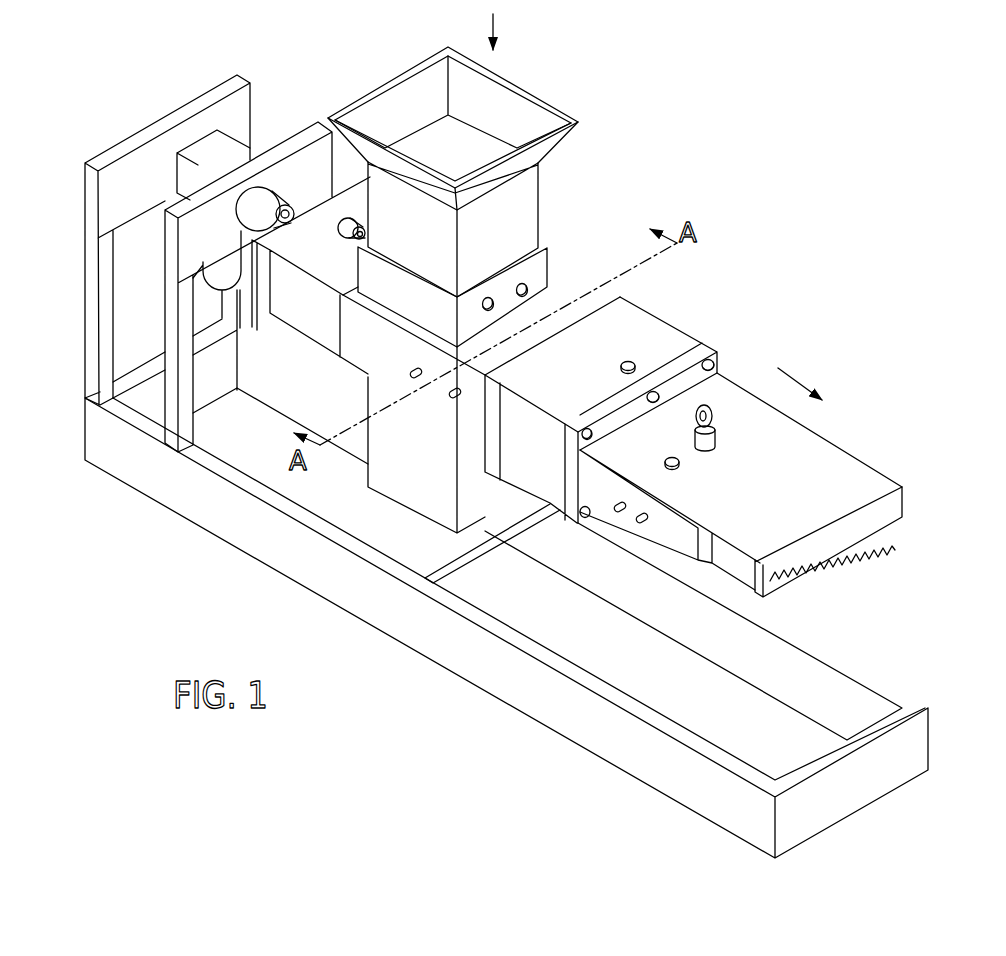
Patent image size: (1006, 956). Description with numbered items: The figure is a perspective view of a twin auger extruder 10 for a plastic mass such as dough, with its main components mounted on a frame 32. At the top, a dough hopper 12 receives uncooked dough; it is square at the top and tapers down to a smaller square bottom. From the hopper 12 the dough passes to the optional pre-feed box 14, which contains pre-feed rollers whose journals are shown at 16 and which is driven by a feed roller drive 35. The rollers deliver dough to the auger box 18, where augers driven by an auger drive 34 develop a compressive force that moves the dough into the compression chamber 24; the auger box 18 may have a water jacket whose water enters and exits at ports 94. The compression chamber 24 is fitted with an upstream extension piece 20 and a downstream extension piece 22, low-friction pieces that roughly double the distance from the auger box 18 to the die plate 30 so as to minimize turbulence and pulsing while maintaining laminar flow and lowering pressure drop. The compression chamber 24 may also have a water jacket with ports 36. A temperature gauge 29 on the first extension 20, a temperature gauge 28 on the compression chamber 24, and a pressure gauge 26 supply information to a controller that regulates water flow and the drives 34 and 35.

The extruder 10 is at (900, 292).
The dough hopper 12 is at (542, 203).
The pre-feed box 14 is at (553, 283).
The journals 16 is at (530, 291).
The auger box 18 is at (346, 335).
The upstream extension piece 20 is at (548, 488).
The downstream extension piece 22 is at (873, 470).
The compression chamber 24 is at (735, 380).
The pressure gauge 26 is at (717, 440).
The temperature gauge 28 is at (676, 467).
The temperature gauge 29 is at (633, 362).
The die plate 30 is at (903, 497).
The frame 32 is at (600, 727).
The auger drive 34 is at (261, 196).
The feed roller drive 35 is at (360, 218).
The ports 36 is at (639, 521).
The ports 94 is at (449, 398).